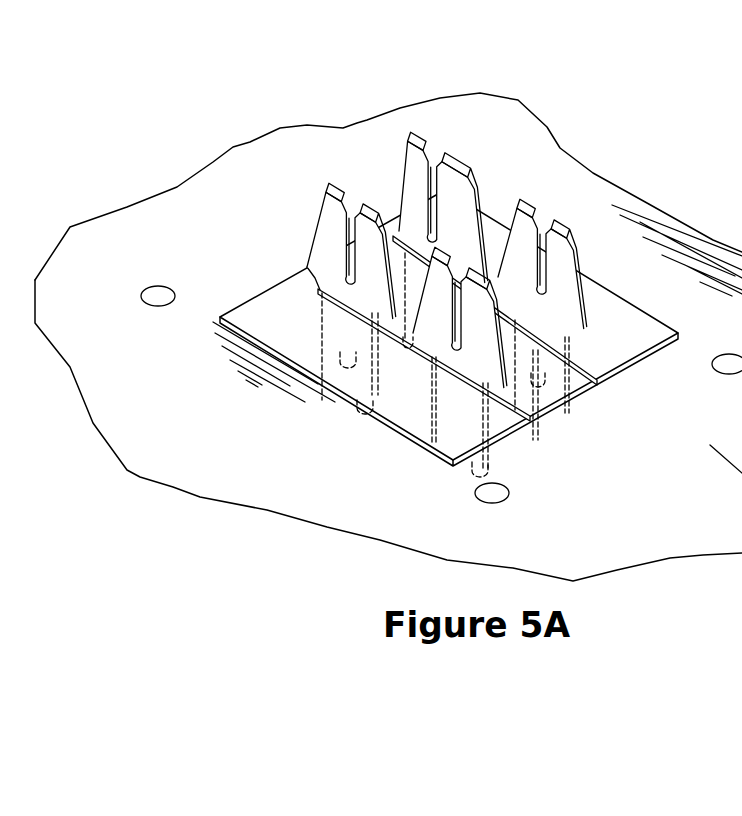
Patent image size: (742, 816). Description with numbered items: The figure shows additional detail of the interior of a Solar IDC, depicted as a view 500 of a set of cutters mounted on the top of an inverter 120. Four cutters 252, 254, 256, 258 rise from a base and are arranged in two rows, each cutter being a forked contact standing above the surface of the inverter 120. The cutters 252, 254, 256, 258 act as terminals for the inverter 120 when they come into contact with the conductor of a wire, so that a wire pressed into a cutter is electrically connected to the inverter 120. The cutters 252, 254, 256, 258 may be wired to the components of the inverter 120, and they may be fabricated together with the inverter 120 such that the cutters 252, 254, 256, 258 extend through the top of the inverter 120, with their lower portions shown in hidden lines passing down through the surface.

The inverter 120 is at (252, 463).
The connector assembly 500 is at (421, 268).
The cutter 252 is at (328, 237).
The cutter 254 is at (407, 187).
The cutter 256 is at (548, 405).
The cutter 258 is at (562, 297).